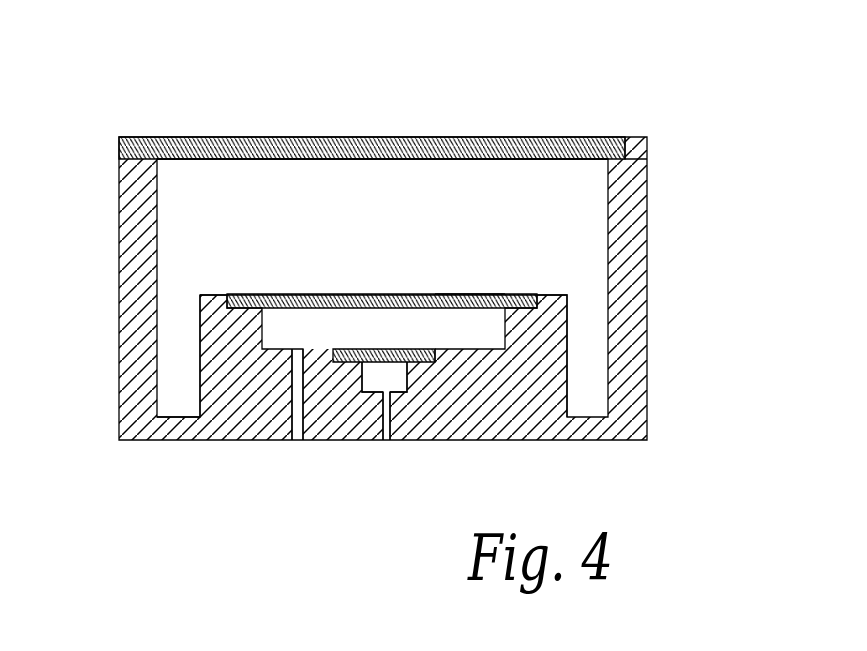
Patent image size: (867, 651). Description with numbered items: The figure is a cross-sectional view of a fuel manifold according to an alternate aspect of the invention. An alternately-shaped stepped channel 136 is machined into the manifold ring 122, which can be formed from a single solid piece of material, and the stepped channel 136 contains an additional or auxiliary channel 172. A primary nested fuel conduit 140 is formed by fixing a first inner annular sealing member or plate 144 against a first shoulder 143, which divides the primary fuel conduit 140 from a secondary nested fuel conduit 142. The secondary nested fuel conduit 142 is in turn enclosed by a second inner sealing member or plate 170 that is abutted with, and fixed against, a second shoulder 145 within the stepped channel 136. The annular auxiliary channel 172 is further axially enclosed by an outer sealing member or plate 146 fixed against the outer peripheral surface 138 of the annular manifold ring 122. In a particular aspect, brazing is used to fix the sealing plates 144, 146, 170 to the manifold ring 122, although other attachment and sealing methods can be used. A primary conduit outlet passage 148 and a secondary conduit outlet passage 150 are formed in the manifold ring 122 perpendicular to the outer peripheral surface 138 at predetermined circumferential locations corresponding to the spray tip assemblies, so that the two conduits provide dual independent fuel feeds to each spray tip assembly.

The manifold ring 122 is at (627, 245).
The stepped channel 136 is at (375, 393).
The outer peripheral surface 138 is at (628, 149).
The primary nested fuel conduit 140 is at (372, 378).
The secondary nested fuel conduit 142 is at (363, 328).
The first shoulder 143 is at (432, 340).
The first inner annular sealing member 144 is at (510, 303).
The second shoulder 145 is at (250, 310).
The outer sealing member 146 is at (455, 147).
The primary conduit outlet passage 148 is at (383, 440).
The secondary conduit outlet passage 150 is at (303, 357).
The second inner sealing member 170 is at (443, 297).
The auxiliary channel 172 is at (547, 217).